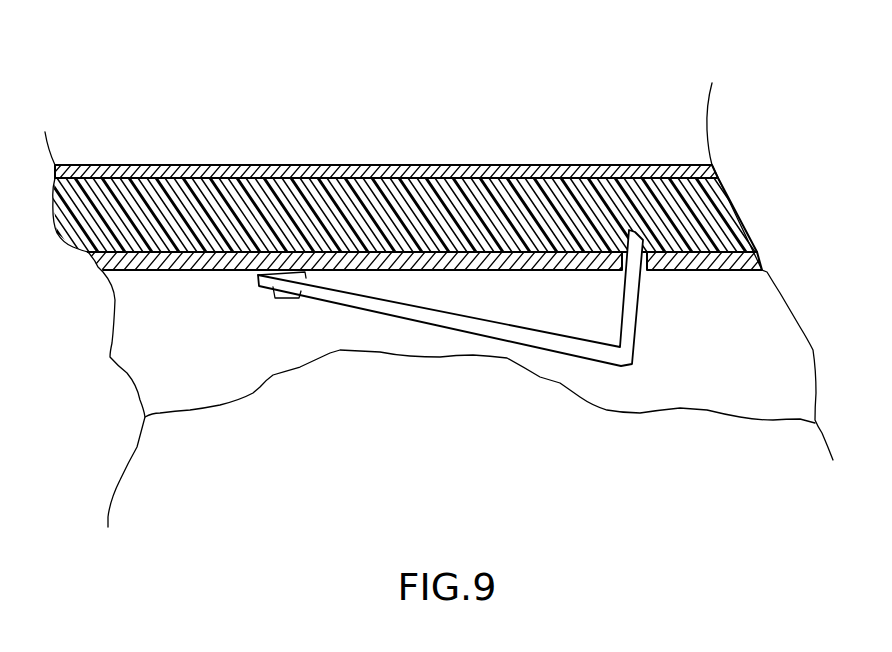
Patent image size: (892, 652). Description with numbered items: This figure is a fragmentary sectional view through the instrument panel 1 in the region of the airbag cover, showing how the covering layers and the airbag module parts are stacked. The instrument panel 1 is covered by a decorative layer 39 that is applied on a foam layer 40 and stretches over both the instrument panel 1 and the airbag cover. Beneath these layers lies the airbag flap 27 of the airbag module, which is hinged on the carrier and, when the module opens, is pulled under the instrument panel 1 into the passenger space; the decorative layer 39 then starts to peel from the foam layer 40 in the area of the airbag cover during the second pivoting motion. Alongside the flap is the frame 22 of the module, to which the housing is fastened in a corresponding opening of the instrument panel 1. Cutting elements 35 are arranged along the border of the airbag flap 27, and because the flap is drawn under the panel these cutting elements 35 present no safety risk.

The instrument panel 1 is at (576, 122).
The decorative layer 39 is at (223, 165).
The foam layer 40 is at (448, 190).
The airbag flap 27 is at (165, 272).
The frame 22 is at (713, 272).
The cutting elements 35 is at (480, 335).